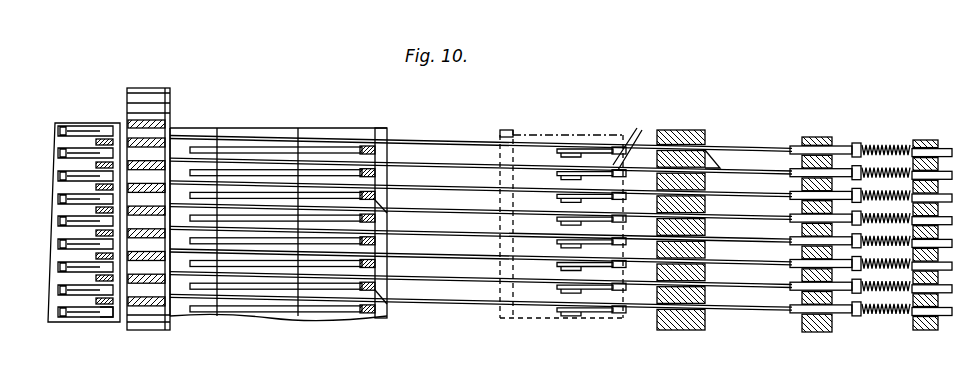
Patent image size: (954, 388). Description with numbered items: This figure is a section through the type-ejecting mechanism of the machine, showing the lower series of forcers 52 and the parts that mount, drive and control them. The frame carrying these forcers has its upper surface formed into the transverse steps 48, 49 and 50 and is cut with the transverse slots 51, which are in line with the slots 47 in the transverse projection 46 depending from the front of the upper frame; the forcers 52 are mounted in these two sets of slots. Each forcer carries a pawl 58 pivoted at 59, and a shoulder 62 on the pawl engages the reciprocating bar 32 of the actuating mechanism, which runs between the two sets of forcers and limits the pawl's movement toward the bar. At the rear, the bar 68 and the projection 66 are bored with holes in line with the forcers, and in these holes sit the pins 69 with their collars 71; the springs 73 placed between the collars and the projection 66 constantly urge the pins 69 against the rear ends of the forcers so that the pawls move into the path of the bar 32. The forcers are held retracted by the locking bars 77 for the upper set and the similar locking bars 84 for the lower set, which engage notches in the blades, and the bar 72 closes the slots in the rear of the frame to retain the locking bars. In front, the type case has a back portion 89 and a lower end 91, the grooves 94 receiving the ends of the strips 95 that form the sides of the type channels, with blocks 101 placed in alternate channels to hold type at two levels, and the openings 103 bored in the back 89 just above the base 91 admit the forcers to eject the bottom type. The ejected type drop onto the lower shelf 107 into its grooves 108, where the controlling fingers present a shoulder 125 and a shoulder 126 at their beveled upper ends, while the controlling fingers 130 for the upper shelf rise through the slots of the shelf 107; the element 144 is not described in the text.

The lower shelf 107 is at (82, 114).
The shoulder 125 is at (95, 175).
The shoulder 126 is at (95, 222).
The grooves 108 is at (56, 247).
The controlling fingers 130 is at (110, 290).
The end plug 144 is at (97, 308).
The back portion 89 is at (160, 330).
The grooves 94 is at (146, 116).
The lower end 91 is at (170, 120).
The strips 95 is at (132, 305).
The blocks 101 is at (178, 156).
The openings 103 is at (228, 160).
The transverse step 50 is at (207, 286).
The transverse step 49 is at (280, 286).
The transverse step 48 is at (335, 286).
The transverse slots 51 is at (332, 292).
The locking bars 77 is at (384, 140).
The bar 72 is at (390, 218).
The locking bars 84 is at (383, 300).
The forcers 52 is at (442, 185).
The bar 32 is at (541, 308).
The pivot 59 is at (580, 300).
The pawl 58 is at (612, 300).
The shoulder 62 is at (636, 139).
The transverse projection 46 is at (688, 323).
The slots 47 is at (718, 162).
The pins 69 is at (803, 268).
The bar 68 is at (820, 327).
The collars 71 is at (857, 314).
The springs 73 is at (898, 310).
The projection 66 is at (932, 328).